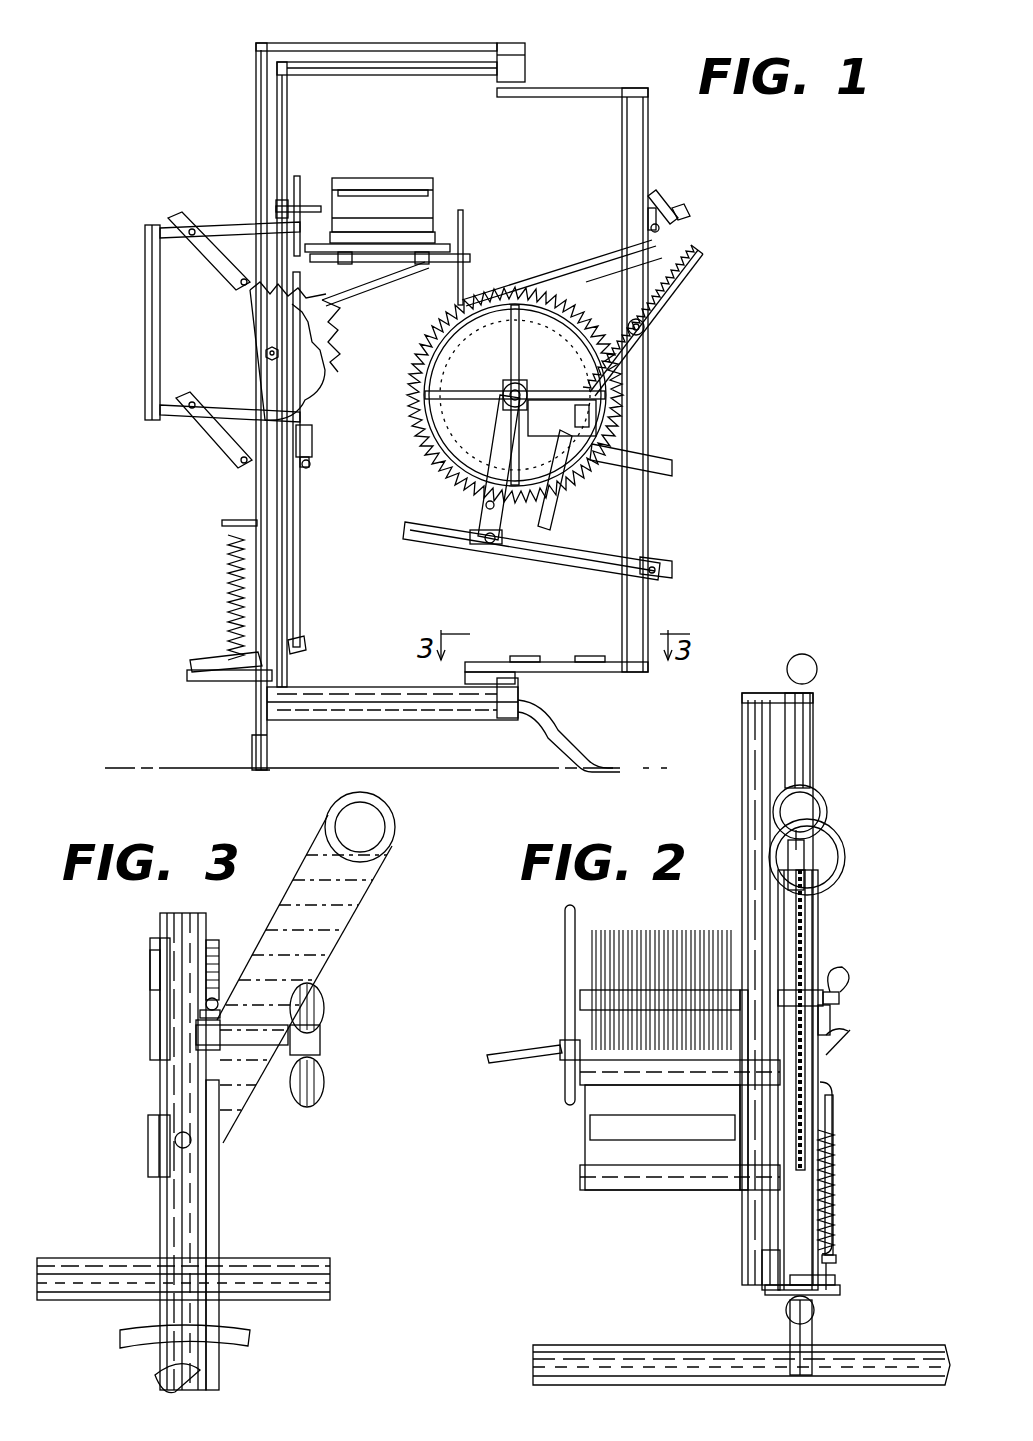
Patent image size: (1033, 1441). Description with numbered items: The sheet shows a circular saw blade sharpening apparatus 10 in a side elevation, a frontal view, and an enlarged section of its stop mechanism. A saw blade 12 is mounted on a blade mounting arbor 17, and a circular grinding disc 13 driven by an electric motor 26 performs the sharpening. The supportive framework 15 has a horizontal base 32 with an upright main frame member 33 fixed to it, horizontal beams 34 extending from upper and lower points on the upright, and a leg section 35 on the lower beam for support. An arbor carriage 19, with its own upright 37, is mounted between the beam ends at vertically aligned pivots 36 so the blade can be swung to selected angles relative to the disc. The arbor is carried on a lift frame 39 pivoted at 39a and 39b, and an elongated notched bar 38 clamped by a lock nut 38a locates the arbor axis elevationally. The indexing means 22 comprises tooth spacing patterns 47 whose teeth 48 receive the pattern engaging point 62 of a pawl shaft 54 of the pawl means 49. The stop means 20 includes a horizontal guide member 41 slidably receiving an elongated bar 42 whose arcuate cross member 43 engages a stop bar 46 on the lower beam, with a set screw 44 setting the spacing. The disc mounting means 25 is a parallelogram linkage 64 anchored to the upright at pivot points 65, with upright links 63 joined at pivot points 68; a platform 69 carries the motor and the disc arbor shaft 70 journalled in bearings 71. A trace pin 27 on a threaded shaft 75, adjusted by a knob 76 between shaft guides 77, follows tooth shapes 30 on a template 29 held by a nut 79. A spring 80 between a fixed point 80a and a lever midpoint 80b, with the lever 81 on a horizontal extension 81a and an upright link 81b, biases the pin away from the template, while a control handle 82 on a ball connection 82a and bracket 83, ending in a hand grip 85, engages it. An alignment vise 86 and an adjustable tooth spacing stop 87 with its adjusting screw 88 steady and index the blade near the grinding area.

In FIG. 1, the saw sharpening apparatus 10 is at (652, 384).
In FIG. 2, the saw sharpening apparatus 10 is at (580, 1130).
In FIG. 1, the circular saw blade 12 is at (425, 462).
In FIG. 2, the circular saw blade 12 is at (810, 962).
In FIG. 1, the circular grinding disc 13 is at (465, 222).
In FIG. 2, the circular grinding disc 13 is at (840, 865).
In FIG. 1, the supportive framework 15 is at (252, 158).
In FIG. 2, the supportive framework 15 is at (818, 748).
In FIG. 1, the blade mounting arbor 17 is at (505, 390).
In FIG. 2, the blade mounting arbor 17 is at (842, 1000).
In FIG. 1, the arbor carriage 19 is at (672, 468).
In FIG. 2, the arbor carriage 19 is at (680, 1190).
In FIG. 1, the stop means 20 is at (538, 650).
In FIG. 3, the stop means 20 is at (155, 1092).
In FIG. 2, the stop means 20 is at (840, 1290).
In FIG. 1, the indexing means 22 is at (426, 422).
In FIG. 2, the indexing means 22 is at (565, 985).
In FIG. 1, the mounting means 25 is at (143, 344).
In FIG. 2, the mounting means 25 is at (825, 920).
In FIG. 1, the electric motor 26 is at (400, 170).
In FIG. 1, the trace pin 27 is at (258, 305).
In FIG. 1, the tooth shape template 29 is at (340, 356).
In FIG. 1, the tooth shapes 30 is at (335, 322).
In FIG. 1, the horizontal base 32 is at (252, 748).
In FIG. 2, the horizontal base 32 is at (640, 1345).
In FIG. 1, the upright main frame member 33 is at (288, 600).
In FIG. 2, the upright main frame member 33 is at (812, 775).
In FIG. 1, the horizontal beams 34 is at (386, 44).
In FIG. 2, the horizontal beams 34 is at (817, 670).
In FIG. 1, the leg section 35 is at (560, 740).
In FIG. 2, the leg section 35 is at (790, 1340).
In FIG. 1, the pivots 36 is at (497, 88).
In FIG. 3, the pivots 36 is at (192, 1143).
In FIG. 1, the upright 37 is at (649, 532).
In FIG. 3, the upright 37 is at (396, 845).
In FIG. 2, the upright 37 is at (745, 813).
In FIG. 1, the elongated notched bar 38 is at (656, 316).
In FIG. 1, the lock nut 38a is at (646, 332).
In FIG. 1, the lift frame 39 is at (640, 450).
In FIG. 2, the lift frame 39 is at (582, 1178).
In FIG. 1, the lift frame pivot 39a is at (672, 566).
In FIG. 1, the lift frame pivot 39b is at (486, 548).
In FIG. 3, the horizontal guide member 41 is at (150, 1042).
In FIG. 3, the elongated bar 42 is at (170, 1220).
In FIG. 3, the arcuate cross member 43 is at (248, 1345).
In FIG. 3, the set screw 44 is at (320, 1045).
In FIG. 3, the stop bar 46 is at (305, 1260).
In FIG. 1, the saw blade teeth spacing patterns 47 is at (424, 383).
In FIG. 2, the saw blade teeth spacing patterns 47 is at (620, 930).
In FIG. 1, the pattern teeth 48 is at (470, 478).
In FIG. 1, the pawl means 49 is at (580, 485).
In FIG. 1, the pawl shaft 54 is at (576, 424).
In FIG. 1, the pattern engaging point 62 is at (568, 380).
In FIG. 1, the upright links 63 is at (146, 388).
In FIG. 2, the upright links 63 is at (832, 1086).
In FIG. 1, the parallelogram linkage 64 is at (144, 290).
In FIG. 1, the anchor pivot points 65 is at (240, 285).
In FIG. 1, the pivot points 68 is at (184, 210).
In FIG. 1, the platform 69 is at (392, 262).
In FIG. 1, the arbor shaft 70 is at (468, 256).
In FIG. 1, the bearings 71 is at (376, 287).
In FIG. 1, the threaded shaft 75 is at (300, 185).
In FIG. 1, the adjusting knob 76 is at (278, 206).
In FIG. 1, the shaft guides 77 is at (383, 197).
In FIG. 1, the nut 79 is at (264, 356).
In FIG. 1, the spring 80 is at (228, 590).
In FIG. 2, the spring 80 is at (836, 1173).
In FIG. 1, the fixed point 80a is at (222, 522).
In FIG. 1, the midpoint 80b is at (228, 646).
In FIG. 1, the lever 81 is at (215, 668).
In FIG. 2, the lever 81 is at (832, 1270).
In FIG. 1, the horizontal extension 81a is at (240, 684).
In FIG. 1, the upright link 81b is at (301, 550).
In FIG. 2, the upright link 81b is at (836, 1140).
In FIG. 1, the control handle 82 is at (314, 455).
In FIG. 2, the control handle 82 is at (565, 1070).
In FIG. 2, the universal ball type connection 82a is at (850, 1040).
In FIG. 2, the bracket 83 is at (832, 1058).
In FIG. 2, the hand grip 85 is at (488, 1058).
In FIG. 1, the alignment vise 86 is at (576, 264).
In FIG. 2, the alignment vise 86 is at (838, 880).
In FIG. 1, the adjustable tooth spacing stop 87 is at (594, 264).
In FIG. 2, the adjustable tooth spacing stop 87 is at (822, 895).
In FIG. 1, the adjusting screw 88 is at (686, 218).